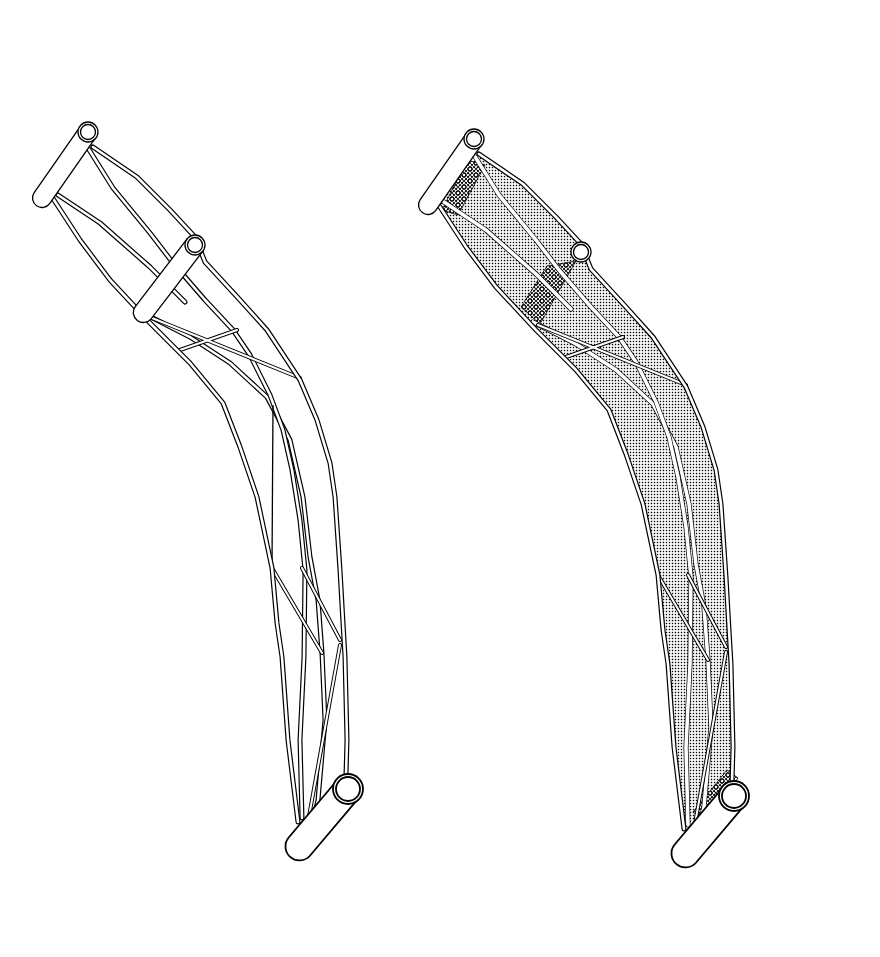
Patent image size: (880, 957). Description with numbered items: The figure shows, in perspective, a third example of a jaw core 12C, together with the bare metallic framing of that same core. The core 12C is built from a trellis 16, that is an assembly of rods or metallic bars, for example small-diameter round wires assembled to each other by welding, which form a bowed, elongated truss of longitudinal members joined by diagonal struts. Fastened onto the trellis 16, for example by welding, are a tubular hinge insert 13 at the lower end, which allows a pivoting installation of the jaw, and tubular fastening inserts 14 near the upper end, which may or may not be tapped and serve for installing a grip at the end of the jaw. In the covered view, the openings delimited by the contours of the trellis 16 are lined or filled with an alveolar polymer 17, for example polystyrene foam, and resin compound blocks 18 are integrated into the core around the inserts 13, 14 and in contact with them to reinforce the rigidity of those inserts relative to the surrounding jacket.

In FIG. 8, the core 12C is at (160, 465).
In FIG. 7, the core 12C is at (579, 456).
In FIG. 8, the tubular hinge insert 13 is at (352, 790).
In FIG. 7, the tubular hinge insert 13 is at (740, 802).
In FIG. 8, the tubular fastening inserts 14 is at (196, 243).
In FIG. 7, the tubular fastening inserts 14 is at (569, 153).
In FIG. 8, the trellis 16 is at (333, 493).
In FIG. 7, the trellis 16 is at (667, 577).
In FIG. 7, the alveolar polymer 17 is at (603, 491).
In FIG. 7, the resin compound blocks 18 is at (543, 497).